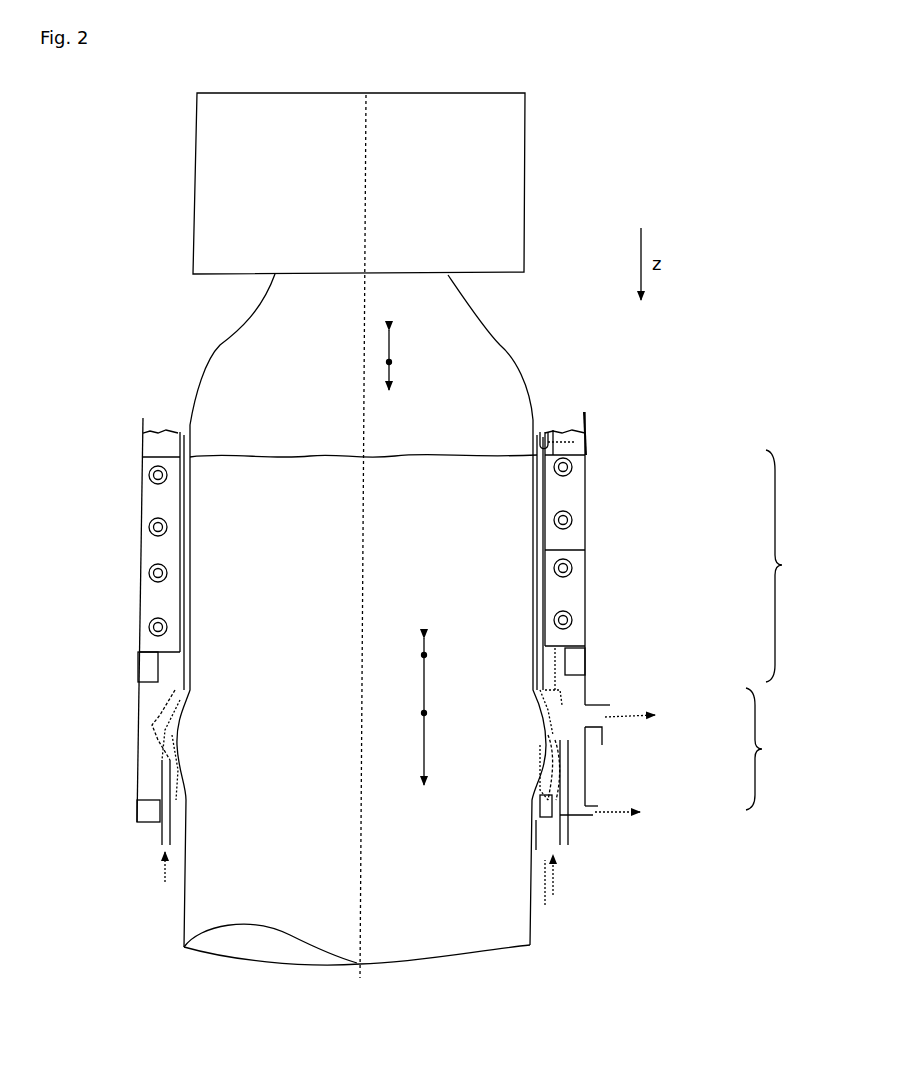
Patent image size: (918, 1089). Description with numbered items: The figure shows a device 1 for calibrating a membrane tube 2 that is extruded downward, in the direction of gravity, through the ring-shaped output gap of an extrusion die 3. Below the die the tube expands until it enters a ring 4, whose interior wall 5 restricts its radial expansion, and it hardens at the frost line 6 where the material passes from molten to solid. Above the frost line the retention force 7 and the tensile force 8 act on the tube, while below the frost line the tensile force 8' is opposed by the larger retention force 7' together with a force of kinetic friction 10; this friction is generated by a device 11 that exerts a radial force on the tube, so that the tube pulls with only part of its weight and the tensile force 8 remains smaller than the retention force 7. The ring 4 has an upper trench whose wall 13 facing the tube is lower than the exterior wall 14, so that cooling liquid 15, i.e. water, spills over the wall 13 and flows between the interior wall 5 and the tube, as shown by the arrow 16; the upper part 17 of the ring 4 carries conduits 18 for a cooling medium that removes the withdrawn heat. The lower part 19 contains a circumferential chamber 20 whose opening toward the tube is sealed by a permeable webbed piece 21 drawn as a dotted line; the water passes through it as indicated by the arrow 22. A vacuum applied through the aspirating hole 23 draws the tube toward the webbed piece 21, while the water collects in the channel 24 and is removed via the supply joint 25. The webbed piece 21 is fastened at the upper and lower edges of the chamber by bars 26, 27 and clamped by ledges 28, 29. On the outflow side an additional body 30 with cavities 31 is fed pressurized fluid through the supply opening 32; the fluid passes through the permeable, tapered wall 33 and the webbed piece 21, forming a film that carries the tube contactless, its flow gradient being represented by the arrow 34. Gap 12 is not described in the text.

The device 1 is at (162, 355).
The membrane tube 2 is at (525, 370).
The extrusion die 3 is at (495, 168).
The ring 4 is at (570, 498).
The interior wall 5 is at (575, 517).
The frost line 6 is at (400, 450).
The retention force 7 is at (405, 360).
The tensile force 8 is at (413, 376).
The retention force 7' is at (445, 678).
The tensile force 8' is at (447, 716).
The force of kinetic friction 10 is at (427, 648).
The device 11 is at (767, 749).
The gap 12 is at (575, 442).
The wall 13 is at (552, 432).
The exterior wall 14 is at (590, 430).
The cooling liquid 15 is at (578, 432).
The arrow 16 is at (587, 550).
The upper part 17 is at (787, 566).
The conduits 18 is at (572, 467).
The lower part 19 is at (665, 858).
The chamber 20 is at (590, 670).
The webbed piece 21 is at (592, 690).
The arrow 22 is at (592, 710).
The aspirating hole 23 is at (602, 745).
The channel 24 is at (570, 820).
The supply joint 25 is at (582, 822).
The bar 26 is at (585, 660).
The bar 27 is at (565, 884).
The ledge 28 is at (533, 660).
The ledge 29 is at (530, 816).
The body 30 is at (562, 768).
The cavities 31 is at (562, 785).
The supply opening 32 is at (530, 840).
The wall 33 is at (530, 772).
The arrow 34 is at (533, 745).